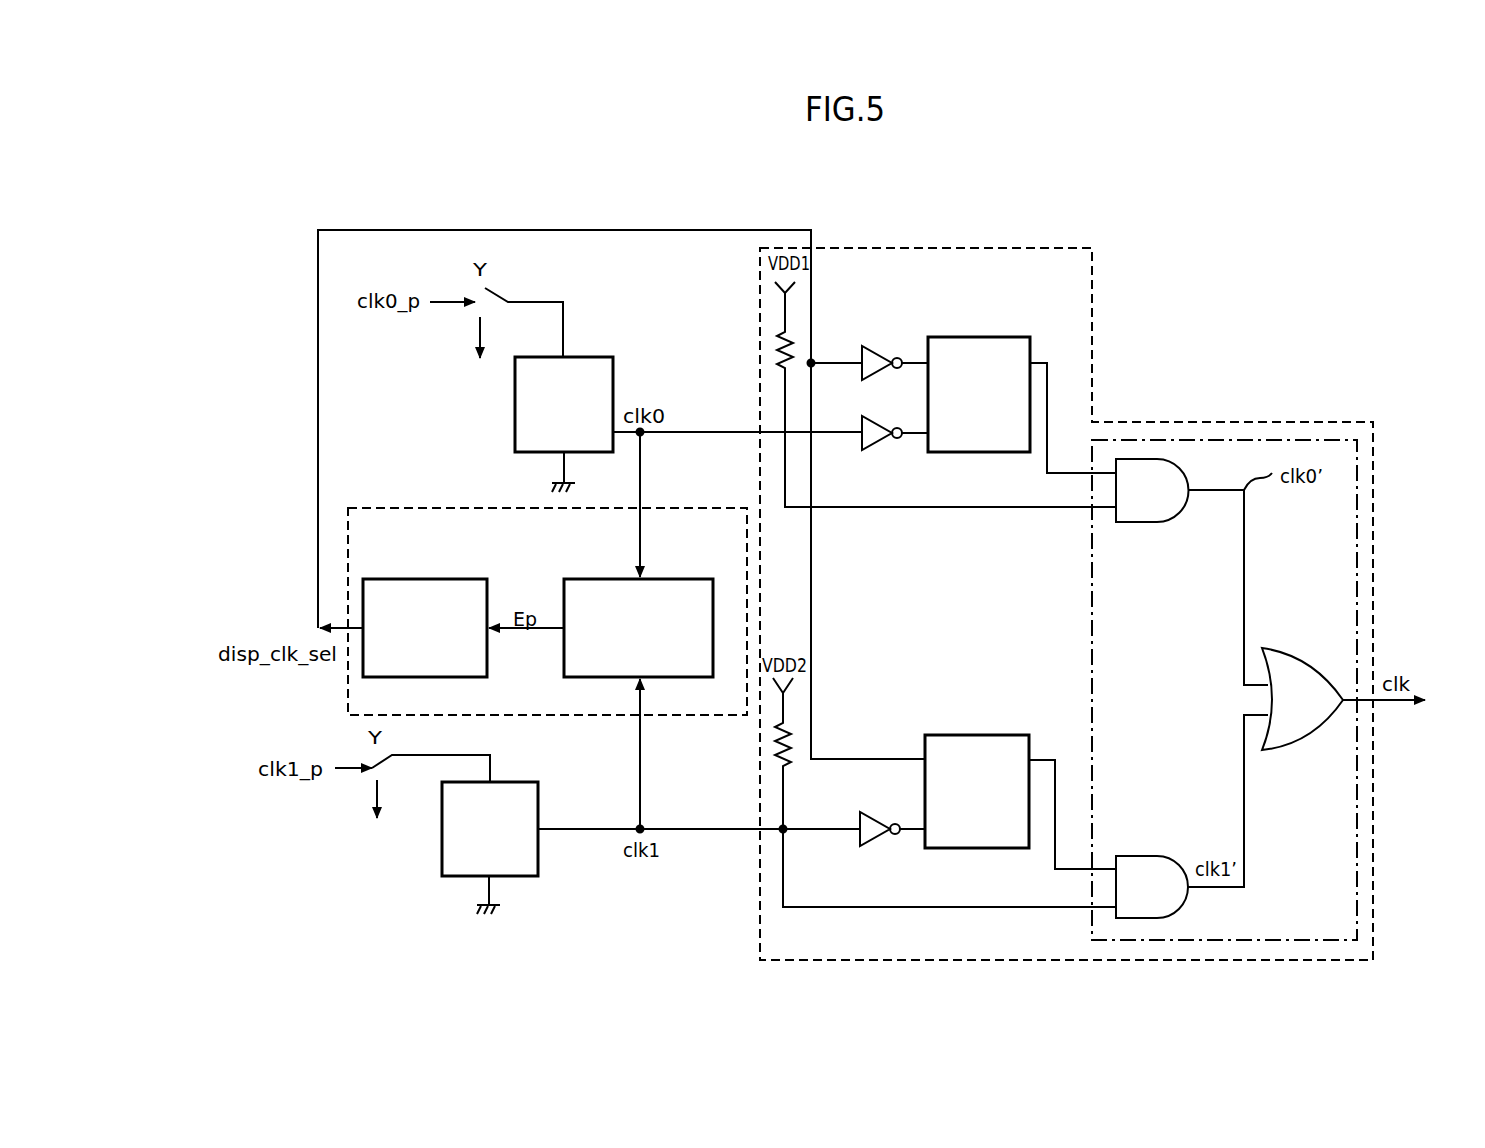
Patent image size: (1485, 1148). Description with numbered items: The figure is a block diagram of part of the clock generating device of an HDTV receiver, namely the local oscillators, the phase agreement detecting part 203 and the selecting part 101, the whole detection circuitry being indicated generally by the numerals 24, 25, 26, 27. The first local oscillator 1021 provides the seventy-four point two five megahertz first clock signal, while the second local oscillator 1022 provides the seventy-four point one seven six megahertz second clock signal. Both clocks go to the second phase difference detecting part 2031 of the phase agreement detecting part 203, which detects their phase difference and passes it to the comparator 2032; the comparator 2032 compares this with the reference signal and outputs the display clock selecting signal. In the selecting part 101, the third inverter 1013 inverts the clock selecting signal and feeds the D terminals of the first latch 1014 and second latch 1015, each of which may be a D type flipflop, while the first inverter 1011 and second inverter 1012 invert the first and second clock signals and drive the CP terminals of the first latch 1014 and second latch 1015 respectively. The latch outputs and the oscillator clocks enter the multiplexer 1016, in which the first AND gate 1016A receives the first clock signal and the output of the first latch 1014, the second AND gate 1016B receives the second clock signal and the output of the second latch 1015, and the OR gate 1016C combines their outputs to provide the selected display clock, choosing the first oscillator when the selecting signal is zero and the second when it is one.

The clock detection circuit 24 is at (1066, 560).
The clock detection circuit 25 is at (1066, 560).
The clock detection circuit 26 is at (1066, 560).
The clock detection circuit 27 is at (977, 187).
The selecting part 101 is at (1272, 418).
The first inverter 1011 is at (870, 444).
The second inverter 1012 is at (869, 840).
The third inverter 1013 is at (876, 352).
The first latch 1014 is at (983, 352).
The second latch 1015 is at (988, 748).
The multiplexer 1016 is at (1176, 690).
The first AND gate 1016A is at (1150, 522).
The second AND gate 1016B is at (1142, 868).
The OR gate 1016C is at (1288, 666).
The first local oscillator 1021 is at (597, 370).
The second local oscillator 1022 is at (528, 797).
The phase agreement detecting part 203 is at (547, 587).
The second phase difference detecting part 2031 is at (685, 597).
The comparator 2032 is at (430, 597).